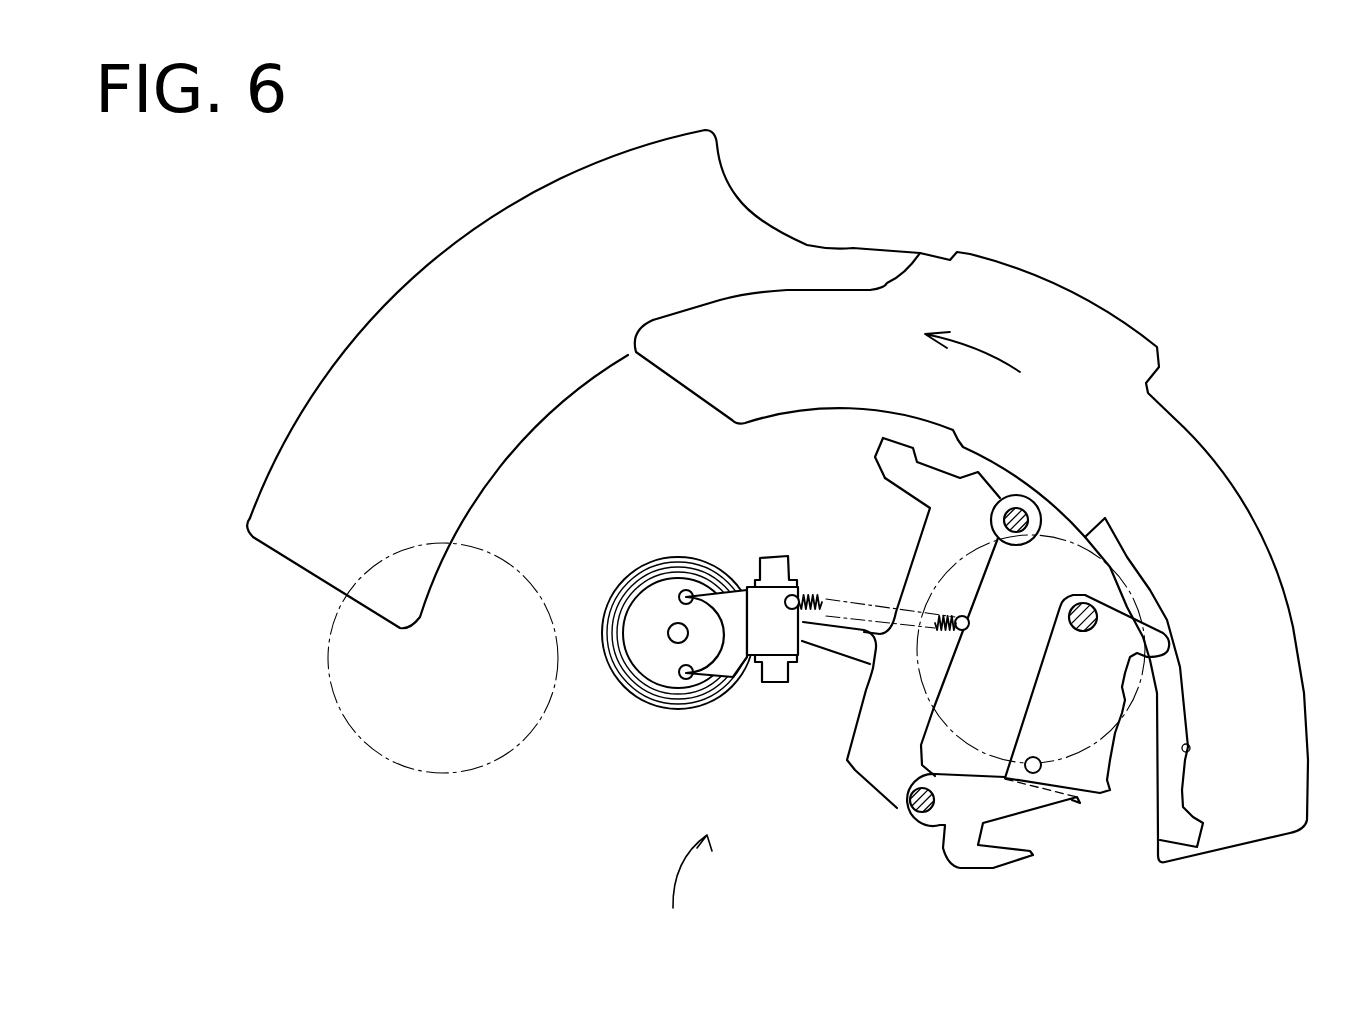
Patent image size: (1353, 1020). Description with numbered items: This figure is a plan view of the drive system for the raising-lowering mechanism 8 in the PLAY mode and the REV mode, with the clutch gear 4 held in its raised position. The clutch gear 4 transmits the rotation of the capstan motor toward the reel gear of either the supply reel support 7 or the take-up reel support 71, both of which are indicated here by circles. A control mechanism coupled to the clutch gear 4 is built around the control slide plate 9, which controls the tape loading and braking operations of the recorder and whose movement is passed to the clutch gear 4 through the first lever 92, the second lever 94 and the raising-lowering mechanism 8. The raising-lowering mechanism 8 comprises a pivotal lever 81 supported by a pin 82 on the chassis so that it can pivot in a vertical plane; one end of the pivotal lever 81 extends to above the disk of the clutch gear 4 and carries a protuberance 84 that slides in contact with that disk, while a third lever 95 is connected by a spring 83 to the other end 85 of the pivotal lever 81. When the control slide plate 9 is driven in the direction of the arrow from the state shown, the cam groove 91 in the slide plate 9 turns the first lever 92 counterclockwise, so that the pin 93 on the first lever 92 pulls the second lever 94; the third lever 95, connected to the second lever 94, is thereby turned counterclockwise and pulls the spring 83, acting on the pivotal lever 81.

The clutch gear 4 is at (643, 650).
The supply reel support 7 is at (410, 770).
The raising-lowering mechanism 8 is at (686, 883).
The control slide plate 9 is at (1093, 310).
The take-up reel support 71 is at (1140, 604).
The pivotal lever 81 is at (758, 596).
The pin 82 is at (778, 563).
The spring 83 is at (850, 660).
The protuberance 84 is at (680, 592).
The other end of the pivotal lever 85 is at (796, 594).
The cam groove 91 is at (1190, 749).
The first lever 92 is at (1113, 766).
The pin 93 is at (1036, 772).
The second lever 94 is at (953, 850).
The third lever 95 is at (866, 762).